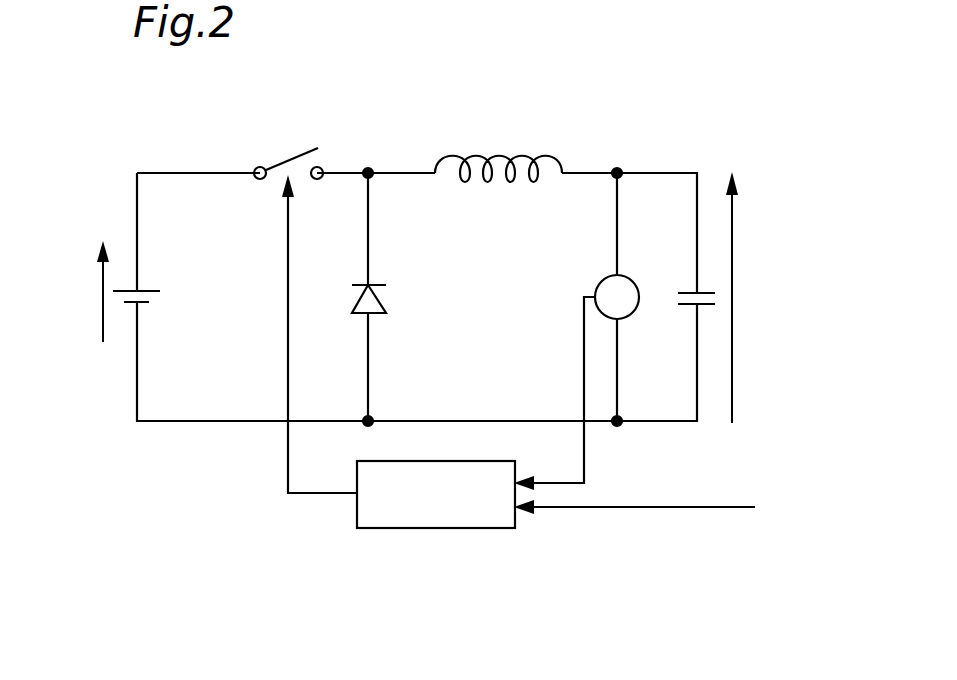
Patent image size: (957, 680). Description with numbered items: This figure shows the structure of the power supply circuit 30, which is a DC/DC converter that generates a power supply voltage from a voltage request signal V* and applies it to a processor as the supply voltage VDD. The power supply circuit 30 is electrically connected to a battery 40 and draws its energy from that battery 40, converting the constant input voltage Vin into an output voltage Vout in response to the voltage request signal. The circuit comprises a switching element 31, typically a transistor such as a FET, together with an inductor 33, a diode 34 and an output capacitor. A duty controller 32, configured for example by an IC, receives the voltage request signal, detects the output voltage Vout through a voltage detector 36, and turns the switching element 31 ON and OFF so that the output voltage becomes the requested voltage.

The power supply circuit 30 is at (237, 533).
The switching element 31 is at (284, 151).
The duty controller 32 is at (435, 530).
The inductor 33 is at (500, 150).
The diode 34 is at (380, 297).
The voltage detector 36 is at (596, 274).
The battery 40 is at (150, 298).